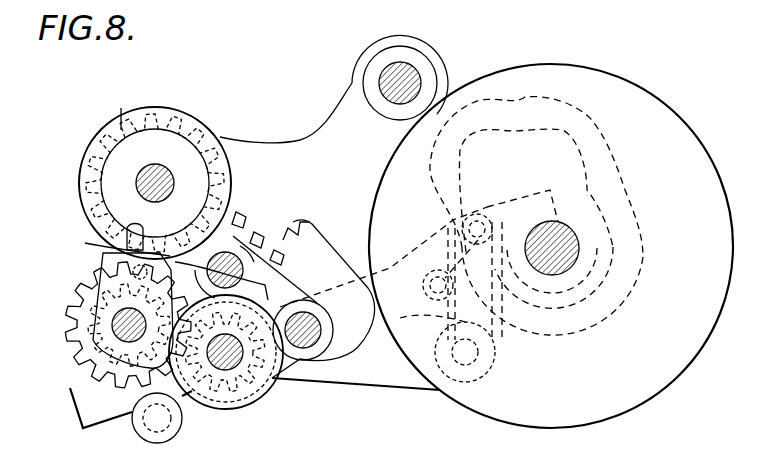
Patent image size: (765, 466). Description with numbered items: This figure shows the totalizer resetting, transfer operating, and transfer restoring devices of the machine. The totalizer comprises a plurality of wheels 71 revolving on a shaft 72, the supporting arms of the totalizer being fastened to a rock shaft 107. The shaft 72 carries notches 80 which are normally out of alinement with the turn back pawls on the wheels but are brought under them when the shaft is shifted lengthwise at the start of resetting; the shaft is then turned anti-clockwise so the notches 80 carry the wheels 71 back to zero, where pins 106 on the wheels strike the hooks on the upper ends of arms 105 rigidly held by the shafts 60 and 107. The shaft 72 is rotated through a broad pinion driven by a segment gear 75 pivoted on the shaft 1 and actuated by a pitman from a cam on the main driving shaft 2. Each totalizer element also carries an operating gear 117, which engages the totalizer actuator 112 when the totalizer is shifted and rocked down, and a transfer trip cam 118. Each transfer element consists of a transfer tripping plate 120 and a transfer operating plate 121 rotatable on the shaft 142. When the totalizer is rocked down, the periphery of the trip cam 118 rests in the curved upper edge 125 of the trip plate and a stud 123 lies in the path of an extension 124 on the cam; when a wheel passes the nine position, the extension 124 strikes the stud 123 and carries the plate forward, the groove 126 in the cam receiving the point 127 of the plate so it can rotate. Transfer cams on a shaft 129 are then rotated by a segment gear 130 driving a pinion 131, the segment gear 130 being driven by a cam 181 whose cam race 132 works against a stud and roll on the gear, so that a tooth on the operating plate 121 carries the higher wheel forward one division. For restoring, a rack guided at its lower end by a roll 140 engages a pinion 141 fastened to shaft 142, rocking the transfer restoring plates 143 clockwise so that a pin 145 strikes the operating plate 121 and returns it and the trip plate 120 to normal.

The shaft 1 is at (398, 61).
The main driving shaft 2 is at (570, 253).
The shaft 60 is at (318, 336).
The totalizer wheel 71 is at (137, 166).
The shaft 72 is at (136, 196).
The segment gear 75 is at (296, 140).
The notch 80 is at (135, 172).
The arm 105 is at (242, 240).
The pin 106 is at (234, 230).
The rock shaft 107 is at (273, 230).
The totalizer actuator 112 is at (99, 327).
The operating gear 117 is at (107, 109).
The transfer trip cam 118 is at (178, 136).
The transfer tripping plate 120 is at (106, 268).
The transfer operating plate 121 is at (255, 302).
The stud 123 is at (133, 273).
The extension 124 is at (128, 246).
The curved upper edge 125 is at (125, 248).
The groove 126 is at (155, 189).
The point 127 is at (244, 271).
The shaft 129 is at (236, 358).
The segment gear 130 is at (378, 378).
The pinion 131 is at (249, 369).
The cam race 132 is at (522, 100).
The roll 140 is at (165, 438).
The pinion 141 is at (92, 345).
The shaft 142 is at (118, 326).
The transfer restoring plate 143 is at (98, 305).
The pin 145 is at (88, 296).
The cam 181 is at (672, 386).